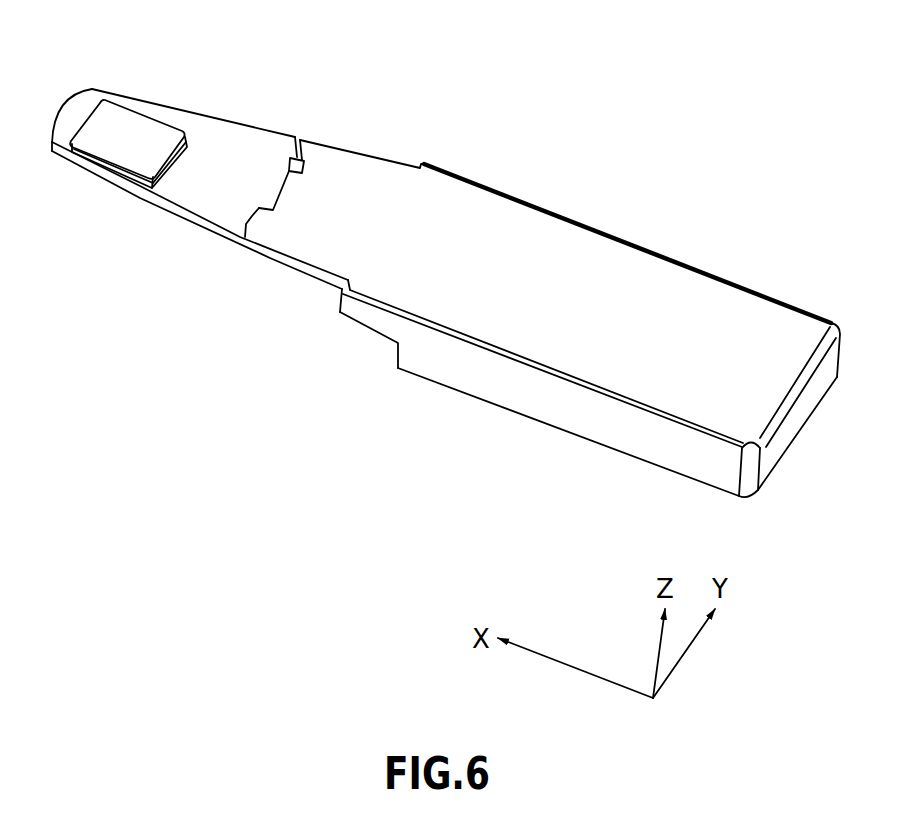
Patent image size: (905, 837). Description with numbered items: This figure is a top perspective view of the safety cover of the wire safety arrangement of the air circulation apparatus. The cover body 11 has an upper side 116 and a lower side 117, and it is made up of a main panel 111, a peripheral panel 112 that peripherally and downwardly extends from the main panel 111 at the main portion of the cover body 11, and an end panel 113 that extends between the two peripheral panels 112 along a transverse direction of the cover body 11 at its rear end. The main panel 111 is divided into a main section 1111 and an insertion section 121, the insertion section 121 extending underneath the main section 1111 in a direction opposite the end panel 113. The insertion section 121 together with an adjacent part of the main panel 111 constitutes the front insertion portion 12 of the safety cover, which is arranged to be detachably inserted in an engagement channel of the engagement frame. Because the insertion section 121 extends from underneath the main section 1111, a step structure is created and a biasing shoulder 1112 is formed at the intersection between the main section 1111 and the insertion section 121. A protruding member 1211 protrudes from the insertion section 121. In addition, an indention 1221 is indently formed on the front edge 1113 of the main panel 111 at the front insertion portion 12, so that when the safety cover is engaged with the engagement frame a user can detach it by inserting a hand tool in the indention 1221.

The cover body 11 is at (466, 277).
The main panel 111 is at (633, 350).
The peripheral panel 112 is at (510, 390).
The end panel 113 is at (785, 432).
The upper side 116 is at (585, 252).
The lower side 117 is at (416, 374).
The main section 1111 is at (455, 236).
The biasing shoulder 1112 is at (247, 212).
The front edge 1113 is at (297, 139).
The front insertion portion 12 is at (188, 240).
The insertion section 121 is at (192, 197).
The protruding member 1211 is at (118, 145).
The indention 1221 is at (280, 181).